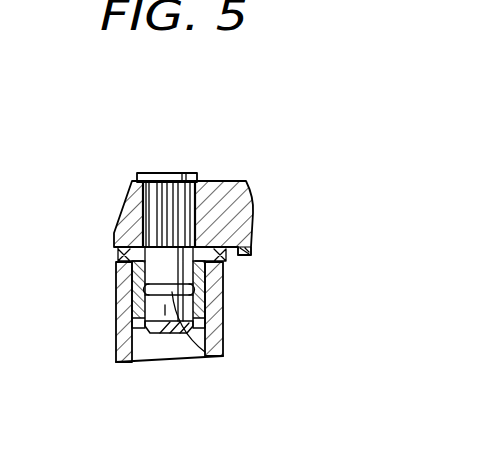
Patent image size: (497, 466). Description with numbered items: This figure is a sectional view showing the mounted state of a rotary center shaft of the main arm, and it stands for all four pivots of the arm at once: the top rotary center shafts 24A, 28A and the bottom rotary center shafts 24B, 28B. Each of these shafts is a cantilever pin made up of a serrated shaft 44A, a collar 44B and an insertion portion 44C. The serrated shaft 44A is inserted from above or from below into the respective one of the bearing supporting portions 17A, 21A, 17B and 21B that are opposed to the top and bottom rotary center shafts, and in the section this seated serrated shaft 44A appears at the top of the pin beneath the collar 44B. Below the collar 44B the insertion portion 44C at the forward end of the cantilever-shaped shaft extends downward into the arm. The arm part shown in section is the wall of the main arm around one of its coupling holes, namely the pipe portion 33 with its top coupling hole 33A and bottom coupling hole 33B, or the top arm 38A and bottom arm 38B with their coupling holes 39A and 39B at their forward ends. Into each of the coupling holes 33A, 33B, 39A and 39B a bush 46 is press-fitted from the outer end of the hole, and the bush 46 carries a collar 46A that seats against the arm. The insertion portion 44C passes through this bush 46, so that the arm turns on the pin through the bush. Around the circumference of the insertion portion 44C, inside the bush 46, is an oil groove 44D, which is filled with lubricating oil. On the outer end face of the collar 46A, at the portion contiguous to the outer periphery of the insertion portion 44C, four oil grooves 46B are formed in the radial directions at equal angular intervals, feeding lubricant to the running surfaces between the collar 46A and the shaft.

The bearing supporting portion 17A is at (271, 218).
The bearing supporting portion 17B is at (271, 218).
The bearing supporting portion 21A is at (271, 218).
The bearing supporting portion 21B is at (226, 203).
The top rotary center shaft 24A is at (287, 149).
The bottom rotary center shaft 24B is at (287, 149).
The top rotary center shaft 28A is at (287, 149).
The bottom rotary center shaft 28B is at (190, 173).
The serrated shaft 44A is at (143, 210).
The collar 44B is at (250, 149).
The insertion portion 44C is at (182, 333).
The oil groove 44D is at (170, 299).
The bush 46 is at (177, 279).
The collar 46A is at (126, 258).
The oil groove 46B is at (216, 268).
The pipe portion 33 is at (78, 316).
The top arm 38A is at (78, 316).
The bottom arm 38B is at (126, 348).
The top coupling hole 33A is at (228, 378).
The bottom coupling hole 33B is at (228, 378).
The coupling hole 39A is at (228, 378).
The coupling hole 39B is at (150, 362).